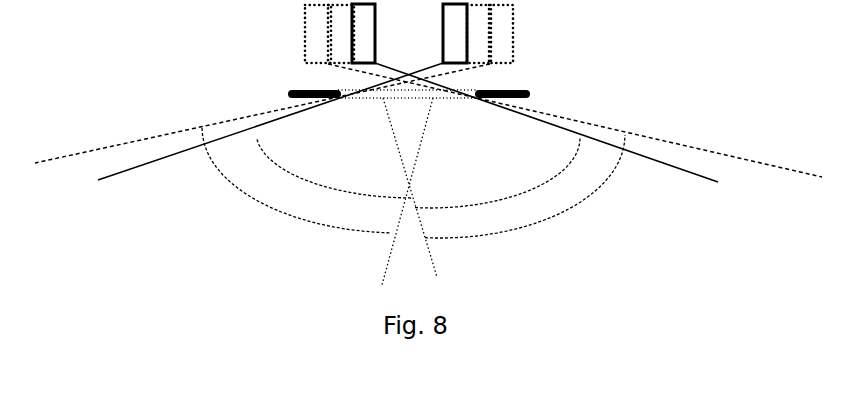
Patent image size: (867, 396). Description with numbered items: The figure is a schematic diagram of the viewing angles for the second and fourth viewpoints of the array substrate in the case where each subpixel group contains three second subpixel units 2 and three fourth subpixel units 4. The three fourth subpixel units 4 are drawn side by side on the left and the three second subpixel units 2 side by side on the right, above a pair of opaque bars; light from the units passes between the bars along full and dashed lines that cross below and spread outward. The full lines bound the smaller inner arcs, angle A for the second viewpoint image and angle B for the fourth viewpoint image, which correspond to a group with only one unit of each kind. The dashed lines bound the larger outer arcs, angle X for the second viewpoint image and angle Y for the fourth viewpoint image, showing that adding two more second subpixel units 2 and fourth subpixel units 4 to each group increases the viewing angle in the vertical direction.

The second subpixel unit 2 is at (478, 33).
The fourth subpixel unit 4 is at (340, 33).
The angle A is at (334, 171).
The angle B is at (497, 181).
The angle X is at (296, 182).
The angle Y is at (525, 186).